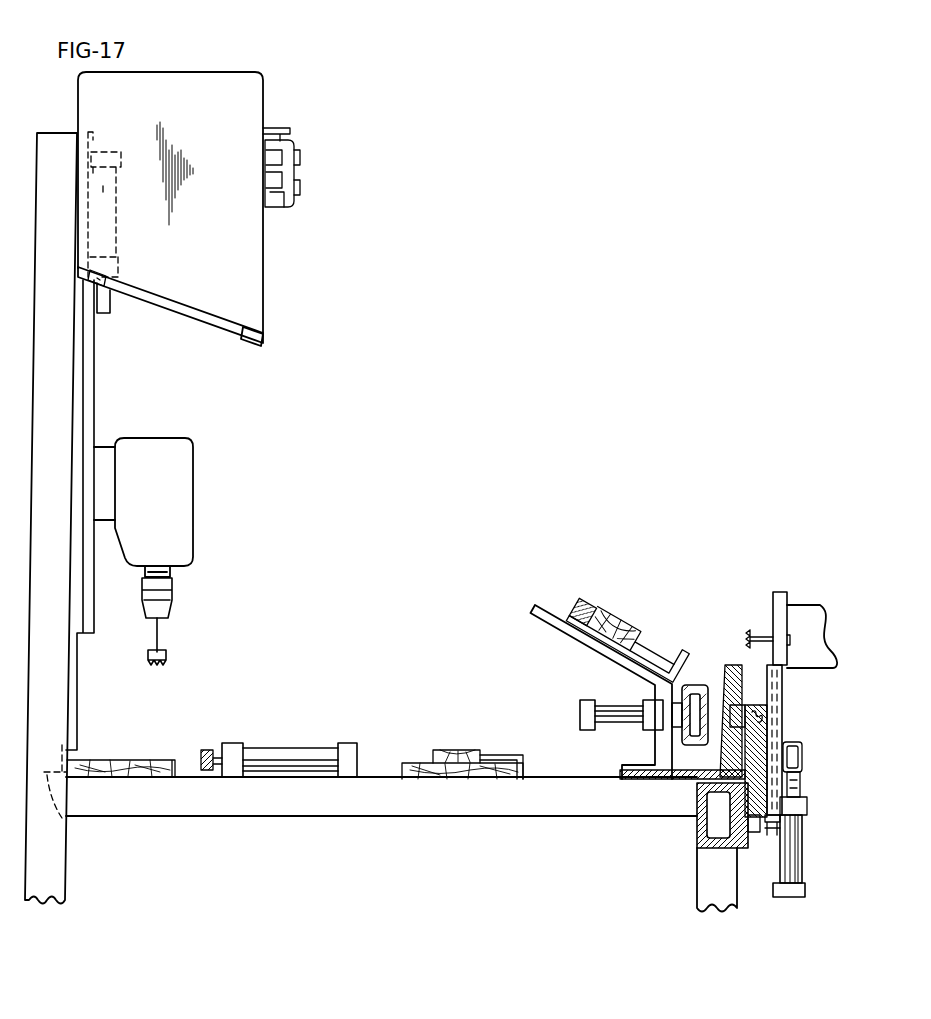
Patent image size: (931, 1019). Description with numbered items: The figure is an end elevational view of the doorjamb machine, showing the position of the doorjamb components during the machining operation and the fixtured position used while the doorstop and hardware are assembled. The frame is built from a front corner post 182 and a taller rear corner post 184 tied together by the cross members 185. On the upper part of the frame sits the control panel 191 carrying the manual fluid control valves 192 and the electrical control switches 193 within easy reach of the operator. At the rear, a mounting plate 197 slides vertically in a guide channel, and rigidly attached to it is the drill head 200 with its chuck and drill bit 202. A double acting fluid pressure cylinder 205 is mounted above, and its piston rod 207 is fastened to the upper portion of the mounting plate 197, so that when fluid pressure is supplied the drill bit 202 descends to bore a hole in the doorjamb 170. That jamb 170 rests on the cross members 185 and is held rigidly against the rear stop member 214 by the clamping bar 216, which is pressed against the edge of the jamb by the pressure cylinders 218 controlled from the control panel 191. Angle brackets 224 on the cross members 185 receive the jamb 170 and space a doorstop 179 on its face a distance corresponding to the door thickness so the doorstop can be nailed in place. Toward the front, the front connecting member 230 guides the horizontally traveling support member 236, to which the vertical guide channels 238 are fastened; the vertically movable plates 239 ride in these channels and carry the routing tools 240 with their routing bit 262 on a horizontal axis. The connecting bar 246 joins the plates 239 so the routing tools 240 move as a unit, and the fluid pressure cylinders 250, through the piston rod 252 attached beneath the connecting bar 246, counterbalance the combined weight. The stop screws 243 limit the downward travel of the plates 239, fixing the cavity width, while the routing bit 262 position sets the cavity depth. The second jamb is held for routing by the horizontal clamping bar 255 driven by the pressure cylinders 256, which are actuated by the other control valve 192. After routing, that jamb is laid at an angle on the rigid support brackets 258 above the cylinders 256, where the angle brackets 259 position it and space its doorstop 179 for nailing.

The control panel 191 is at (237, 78).
The electrical control switches 193 is at (300, 157).
The manual fluid control valves 192 is at (281, 205).
The double acting fluid pressure cylinder 205 is at (117, 193).
The piston rod 207 is at (120, 284).
The mounting plate 197 is at (94, 386).
The drill head 200 is at (192, 495).
The drill bit 202 is at (162, 645).
The doorjamb 170 is at (410, 765).
The clamping bar 216 is at (205, 750).
The pressure cylinders 218 is at (278, 752).
The doorstop 179 is at (614, 615).
The angle brackets 224 is at (510, 755).
The cross members 185 is at (403, 816).
The rear stop member 214 is at (66, 822).
The rear corner posts 184 is at (62, 872).
The support brackets 258 is at (552, 625).
The angle brackets 259 is at (627, 637).
The pressure cylinders 256 is at (630, 722).
The clamping bar 255 is at (694, 745).
The vertically movable plates 239 is at (779, 595).
The routing tools 240 is at (805, 612).
The routing bit 262 is at (746, 630).
The guide channels 238 is at (783, 687).
The front connecting member 230 is at (757, 733).
The connecting bar 246 is at (797, 750).
The piston rod 252 is at (800, 792).
The support member 236 is at (750, 800).
The stop screws 243 is at (769, 838).
The fluid pressure cylinders 250 is at (805, 857).
The front corner posts 182 is at (718, 915).